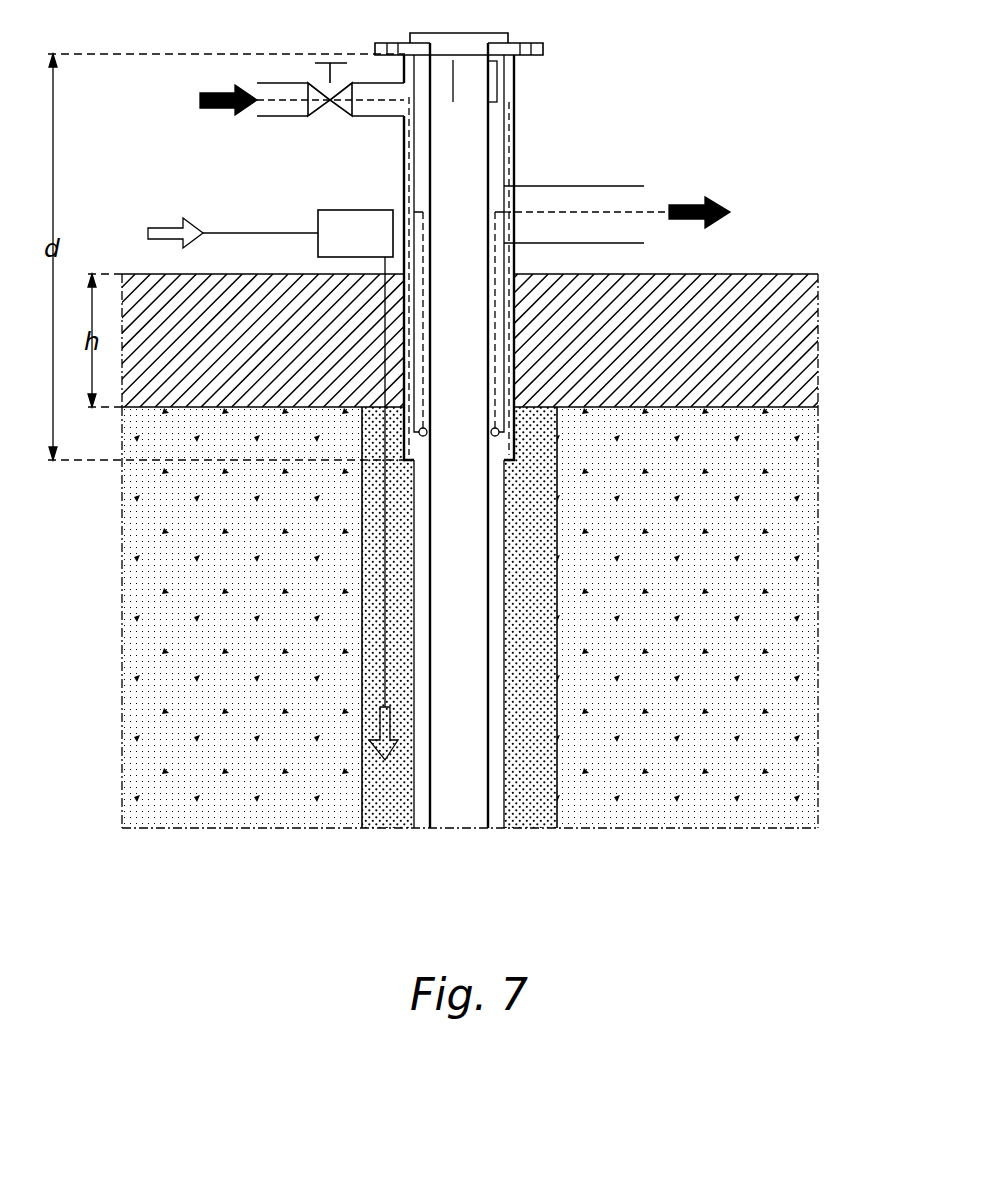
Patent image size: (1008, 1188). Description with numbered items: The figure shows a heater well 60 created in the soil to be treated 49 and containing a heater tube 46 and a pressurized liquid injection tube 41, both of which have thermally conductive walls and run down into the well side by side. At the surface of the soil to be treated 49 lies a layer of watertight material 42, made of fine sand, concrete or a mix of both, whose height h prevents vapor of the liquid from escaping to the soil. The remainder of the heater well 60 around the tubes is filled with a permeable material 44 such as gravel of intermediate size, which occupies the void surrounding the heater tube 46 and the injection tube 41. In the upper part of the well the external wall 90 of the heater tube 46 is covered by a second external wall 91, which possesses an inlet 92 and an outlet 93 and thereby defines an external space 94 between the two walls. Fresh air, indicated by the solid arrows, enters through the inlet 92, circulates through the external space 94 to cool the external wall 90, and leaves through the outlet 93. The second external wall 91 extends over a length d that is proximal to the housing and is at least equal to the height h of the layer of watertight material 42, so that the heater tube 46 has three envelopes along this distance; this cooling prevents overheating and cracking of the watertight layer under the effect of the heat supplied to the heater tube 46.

The pressurized liquid injection tube 41 is at (387, 675).
The layer of watertight material 42 is at (788, 346).
The permeable material 44 is at (534, 810).
The heater tube 46 is at (461, 810).
The soil to be treated 49 is at (788, 608).
The heater well 60 is at (362, 830).
The external wall of the heater tube 90 is at (504, 73).
The second external wall 91 is at (515, 128).
The inlet 92 is at (200, 100).
The outlet 93 is at (690, 206).
The external space 94 is at (617, 211).